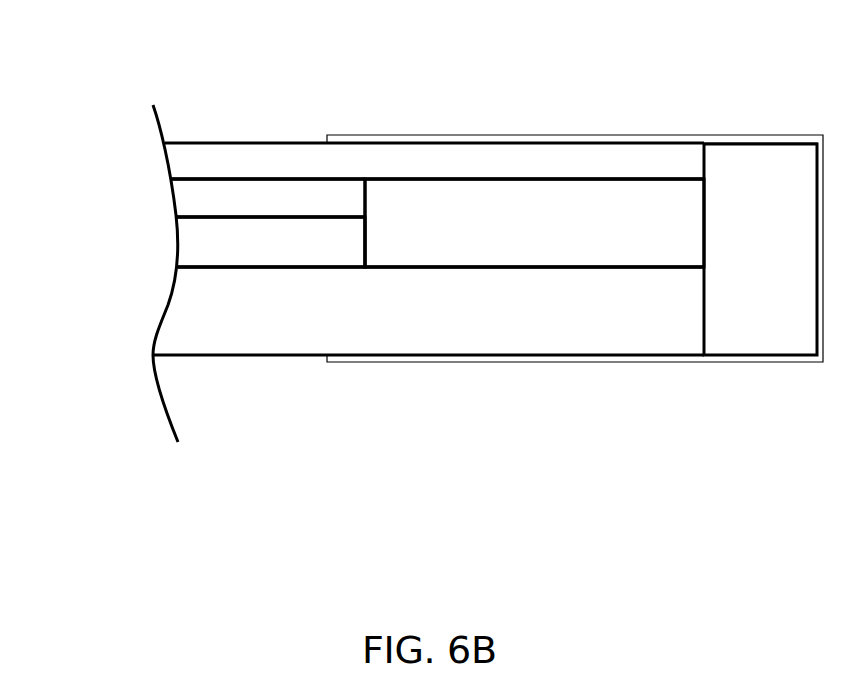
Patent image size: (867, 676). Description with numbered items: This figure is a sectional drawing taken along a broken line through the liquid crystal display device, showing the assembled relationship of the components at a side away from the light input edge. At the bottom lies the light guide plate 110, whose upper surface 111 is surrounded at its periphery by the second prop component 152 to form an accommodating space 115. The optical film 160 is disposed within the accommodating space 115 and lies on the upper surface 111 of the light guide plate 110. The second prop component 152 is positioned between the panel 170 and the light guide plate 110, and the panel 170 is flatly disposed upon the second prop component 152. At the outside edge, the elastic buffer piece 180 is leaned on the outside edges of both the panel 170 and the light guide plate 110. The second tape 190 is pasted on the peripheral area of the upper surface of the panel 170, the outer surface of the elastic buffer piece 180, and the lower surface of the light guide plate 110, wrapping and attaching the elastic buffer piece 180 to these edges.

The light guide plate 110 is at (286, 307).
The upper surface 111 is at (508, 266).
The accommodating space 115 is at (200, 205).
The second prop component 152 is at (493, 210).
The optical film 160 is at (215, 239).
The panel 170 is at (267, 160).
The elastic buffer piece 180 is at (758, 317).
The second tape 190 is at (715, 138).